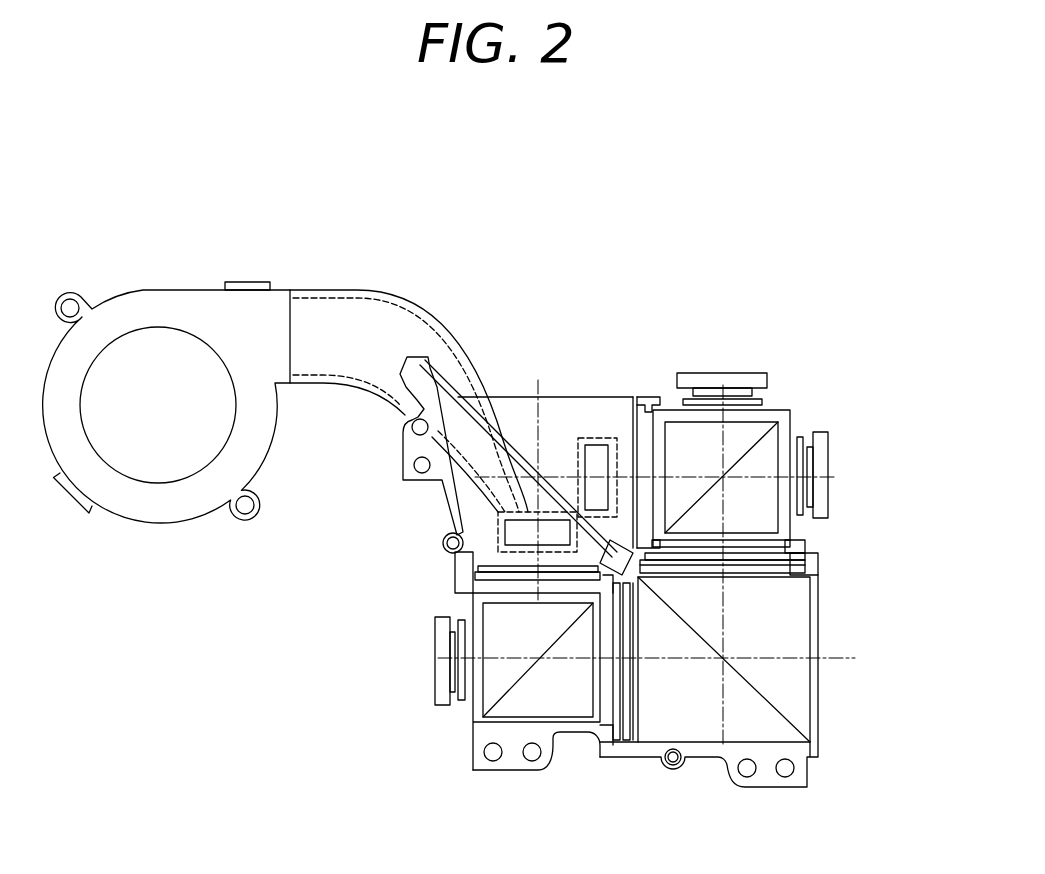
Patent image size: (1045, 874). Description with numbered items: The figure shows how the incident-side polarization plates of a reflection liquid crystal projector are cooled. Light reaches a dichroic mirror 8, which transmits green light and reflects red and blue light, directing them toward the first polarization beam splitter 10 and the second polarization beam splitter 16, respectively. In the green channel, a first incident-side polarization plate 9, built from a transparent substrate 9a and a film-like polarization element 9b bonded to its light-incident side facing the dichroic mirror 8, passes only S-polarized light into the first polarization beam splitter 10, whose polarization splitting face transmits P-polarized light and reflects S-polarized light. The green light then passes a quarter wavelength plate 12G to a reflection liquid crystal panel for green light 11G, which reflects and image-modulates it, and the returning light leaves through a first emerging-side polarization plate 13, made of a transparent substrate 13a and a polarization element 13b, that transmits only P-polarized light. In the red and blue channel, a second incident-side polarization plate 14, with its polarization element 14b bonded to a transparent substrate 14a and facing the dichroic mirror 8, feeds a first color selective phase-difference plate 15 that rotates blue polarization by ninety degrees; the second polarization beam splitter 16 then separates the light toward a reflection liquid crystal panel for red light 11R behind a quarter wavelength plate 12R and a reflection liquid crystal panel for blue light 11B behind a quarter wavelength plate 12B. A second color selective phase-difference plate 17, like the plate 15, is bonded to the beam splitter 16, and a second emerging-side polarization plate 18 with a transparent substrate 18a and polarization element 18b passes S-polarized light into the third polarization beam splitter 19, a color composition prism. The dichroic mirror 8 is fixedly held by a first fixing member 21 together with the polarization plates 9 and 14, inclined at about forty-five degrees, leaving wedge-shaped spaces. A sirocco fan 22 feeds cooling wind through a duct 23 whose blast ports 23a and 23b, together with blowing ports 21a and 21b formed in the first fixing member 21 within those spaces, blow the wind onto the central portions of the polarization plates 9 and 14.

The dichroic mirror 8 is at (412, 428).
The first incident-side polarization plate 9 is at (453, 539).
The transparent substrate 9a is at (477, 572).
The polarization element 9b is at (457, 530).
The first polarization beam splitter 10 is at (492, 620).
The reflection liquid crystal panel for green light 11G is at (432, 642).
The quarter wavelength plate for green light 12G is at (461, 700).
The first emerging-side polarization plate 13 is at (614, 716).
The transparent substrate 13a is at (622, 730).
The polarization element 13b is at (610, 742).
The second incident-side polarization plate 14 is at (760, 410).
The transparent substrate 14a is at (660, 405).
The polarization element 14b is at (633, 395).
The first color selective phase-difference plate 15 is at (735, 383).
The reflection liquid crystal panel for red light 11R is at (723, 392).
The quarter wavelength plate for red light 12R is at (720, 404).
The second polarization beam splitter 16 is at (773, 430).
The quarter wavelength plate for blue light 12B is at (803, 436).
The reflection liquid crystal panel for blue light 11B is at (812, 458).
The second color selective phase-difference plate 17 is at (770, 540).
The second emerging-side polarization plate 18 is at (797, 565).
The transparent substrate 18a is at (817, 568).
The polarization element 18b is at (807, 543).
The third polarization beam splitter 19 is at (692, 725).
The first fixing member 21 is at (531, 413).
The blowing port 21a is at (522, 530).
The blowing port 21b is at (598, 457).
The sirocco fan 22 is at (133, 305).
The duct 23 is at (332, 310).
The blast port 23a is at (512, 512).
The blast port 23b is at (582, 438).